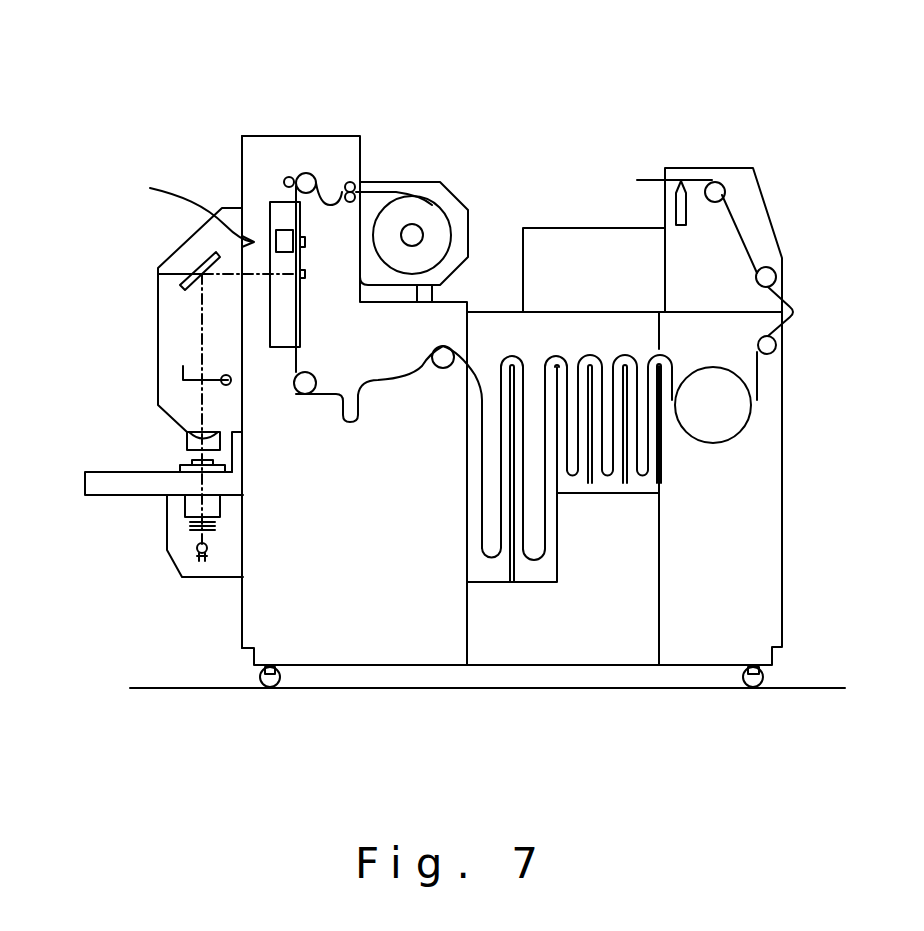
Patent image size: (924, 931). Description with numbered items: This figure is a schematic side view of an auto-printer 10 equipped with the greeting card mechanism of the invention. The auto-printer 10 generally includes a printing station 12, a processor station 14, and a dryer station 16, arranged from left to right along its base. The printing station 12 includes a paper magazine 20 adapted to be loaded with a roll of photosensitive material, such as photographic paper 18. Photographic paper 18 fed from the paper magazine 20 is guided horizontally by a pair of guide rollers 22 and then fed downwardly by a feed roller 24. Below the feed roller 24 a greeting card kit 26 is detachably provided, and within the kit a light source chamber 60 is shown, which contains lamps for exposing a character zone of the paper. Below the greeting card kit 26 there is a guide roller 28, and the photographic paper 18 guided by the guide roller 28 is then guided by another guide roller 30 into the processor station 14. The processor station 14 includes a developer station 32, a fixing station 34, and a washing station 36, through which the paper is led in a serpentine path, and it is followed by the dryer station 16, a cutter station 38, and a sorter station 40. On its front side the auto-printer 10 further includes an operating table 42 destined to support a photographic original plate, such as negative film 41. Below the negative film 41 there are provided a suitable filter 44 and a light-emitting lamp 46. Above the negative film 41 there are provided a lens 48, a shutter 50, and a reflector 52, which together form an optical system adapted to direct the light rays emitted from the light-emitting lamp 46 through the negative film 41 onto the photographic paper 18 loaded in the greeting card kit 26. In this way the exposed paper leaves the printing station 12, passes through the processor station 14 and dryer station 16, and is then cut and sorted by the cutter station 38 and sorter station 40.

The auto-printer 10 is at (668, 134).
The printing station 12 is at (360, 700).
The processor station 14 is at (562, 700).
The dryer station 16 is at (700, 700).
The photographic paper 18 is at (433, 230).
The paper magazine 20 is at (428, 190).
The guide rollers 22 is at (350, 181).
The feed roller 24 is at (303, 178).
The greeting card kit 26 is at (186, 209).
The guide roller 28 is at (295, 395).
The guide roller 30 is at (433, 367).
The developer station 32 is at (490, 570).
The fixing station 34 is at (528, 570).
The washing station 36 is at (605, 487).
The cutter station 38 is at (755, 228).
The sorter station 40 is at (577, 247).
The negative film 41 is at (188, 461).
The operating table 42 is at (150, 488).
The filter 44 is at (195, 530).
The light-emitting lamp 46 is at (195, 550).
The lens 48 is at (187, 447).
The shutter 50 is at (183, 366).
The reflector 52 is at (183, 278).
The light source chamber 60 is at (283, 233).